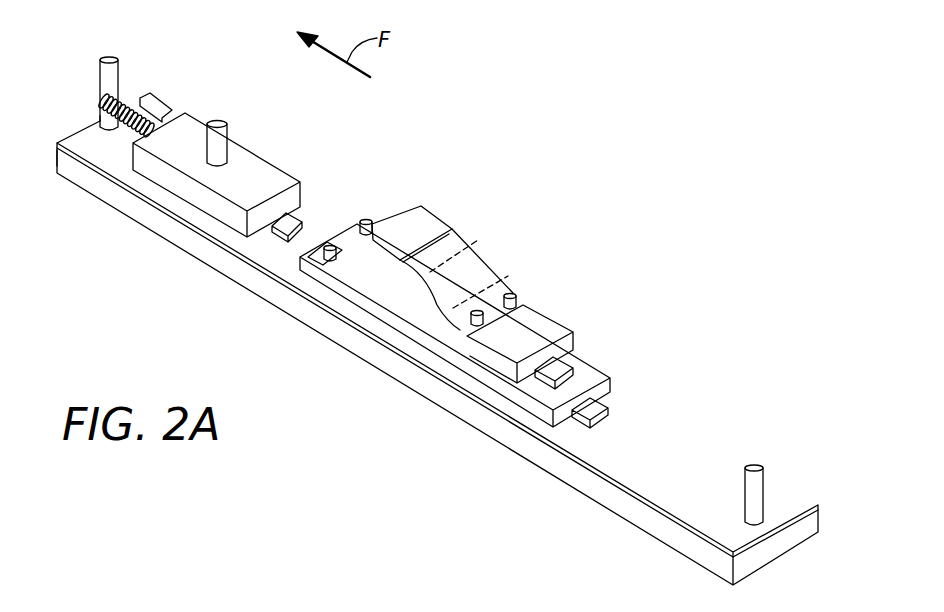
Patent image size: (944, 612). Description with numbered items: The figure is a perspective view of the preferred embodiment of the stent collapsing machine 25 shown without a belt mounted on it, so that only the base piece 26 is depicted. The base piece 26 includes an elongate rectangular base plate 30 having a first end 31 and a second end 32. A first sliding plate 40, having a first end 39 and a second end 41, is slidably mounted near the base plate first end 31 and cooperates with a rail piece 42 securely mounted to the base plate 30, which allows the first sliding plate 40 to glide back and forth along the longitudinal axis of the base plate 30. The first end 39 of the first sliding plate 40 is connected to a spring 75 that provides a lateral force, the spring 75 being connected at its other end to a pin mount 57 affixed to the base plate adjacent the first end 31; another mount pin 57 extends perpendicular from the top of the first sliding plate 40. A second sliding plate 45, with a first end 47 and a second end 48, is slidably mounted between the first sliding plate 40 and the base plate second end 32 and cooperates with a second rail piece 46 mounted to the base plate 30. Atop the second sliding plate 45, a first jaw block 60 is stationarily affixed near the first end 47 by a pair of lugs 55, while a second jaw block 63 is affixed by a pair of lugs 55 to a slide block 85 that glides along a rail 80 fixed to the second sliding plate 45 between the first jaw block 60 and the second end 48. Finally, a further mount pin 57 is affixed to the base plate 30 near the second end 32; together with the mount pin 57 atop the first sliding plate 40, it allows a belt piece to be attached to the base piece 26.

The stent collapsing machine 25 is at (655, 179).
The base piece 26 is at (365, 385).
The base plate 30 is at (210, 247).
The first end 31 is at (80, 128).
The second end 32 is at (780, 545).
The first end 39 is at (137, 162).
The first sliding plate 40 is at (267, 180).
The second end 41 is at (258, 220).
The rail piece 42 is at (302, 240).
The second sliding plate 45 is at (597, 370).
The second rail piece 46 is at (573, 420).
The first end 47 is at (333, 254).
The second end 48 is at (603, 378).
The lugs 55 is at (365, 220).
The mount pin 57 is at (117, 78).
The first jaw block 60 is at (422, 223).
The second jaw block 63 is at (468, 243).
The spring 75 is at (150, 113).
The rail 80 is at (563, 364).
The slide block 85 is at (545, 324).